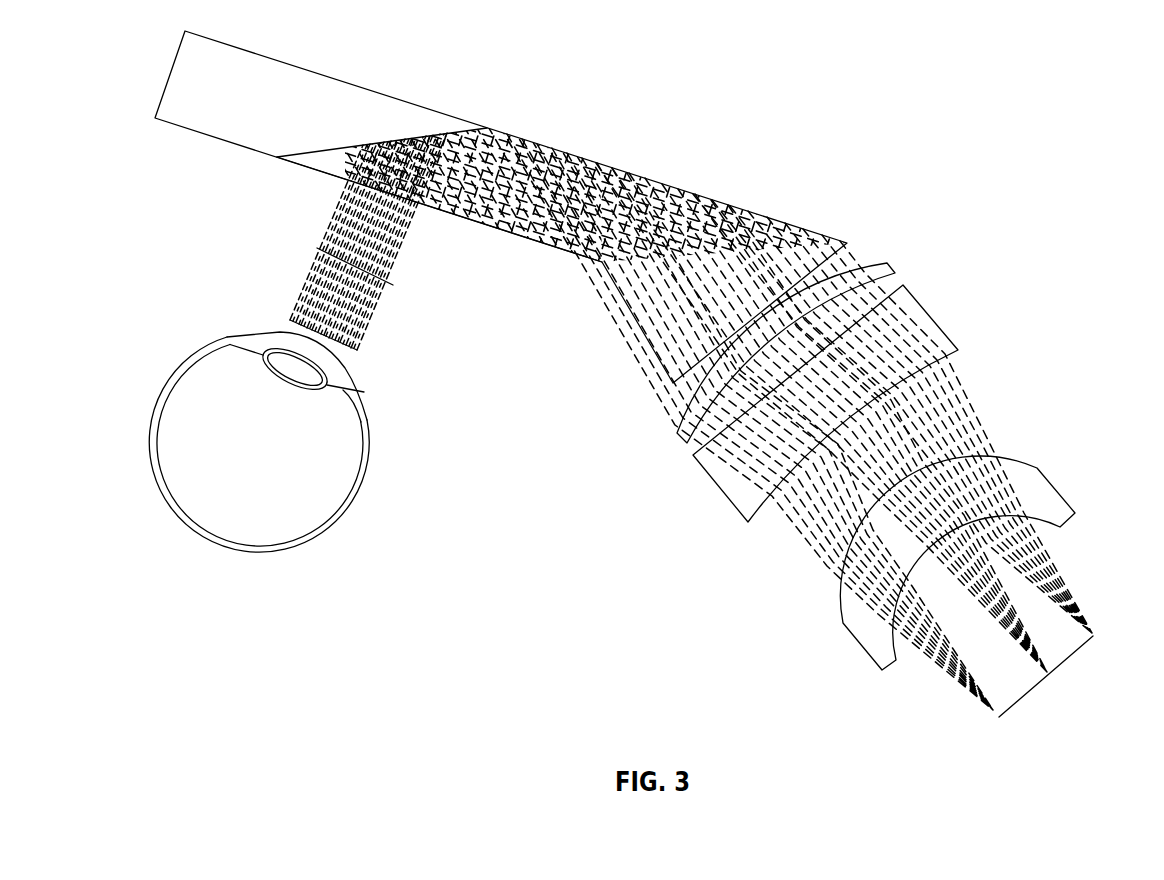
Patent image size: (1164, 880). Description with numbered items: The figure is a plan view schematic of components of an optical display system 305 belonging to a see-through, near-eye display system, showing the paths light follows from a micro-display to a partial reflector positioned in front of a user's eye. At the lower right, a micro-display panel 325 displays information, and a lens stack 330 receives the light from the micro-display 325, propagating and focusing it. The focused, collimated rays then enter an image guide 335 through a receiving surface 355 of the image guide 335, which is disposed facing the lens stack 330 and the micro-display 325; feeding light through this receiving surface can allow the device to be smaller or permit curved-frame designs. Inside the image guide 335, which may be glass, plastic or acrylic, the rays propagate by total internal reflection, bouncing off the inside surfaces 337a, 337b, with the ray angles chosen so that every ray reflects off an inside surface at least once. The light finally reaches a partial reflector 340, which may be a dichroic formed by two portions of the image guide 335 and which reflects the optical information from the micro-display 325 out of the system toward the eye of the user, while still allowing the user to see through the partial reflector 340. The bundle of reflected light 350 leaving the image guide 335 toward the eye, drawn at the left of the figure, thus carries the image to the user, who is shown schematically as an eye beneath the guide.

The near-eye display optical system 305 is at (978, 65).
The micro-display panel 325 is at (1077, 676).
The lens stack 330 is at (905, 443).
The image guide 335 is at (677, 187).
The surface of the image guide 337a is at (552, 163).
The surface of the image guide 337b is at (527, 238).
The partial reflector 340 is at (368, 138).
The out-coupled light toward eye 350 is at (347, 177).
The receiving surface 355 is at (682, 380).